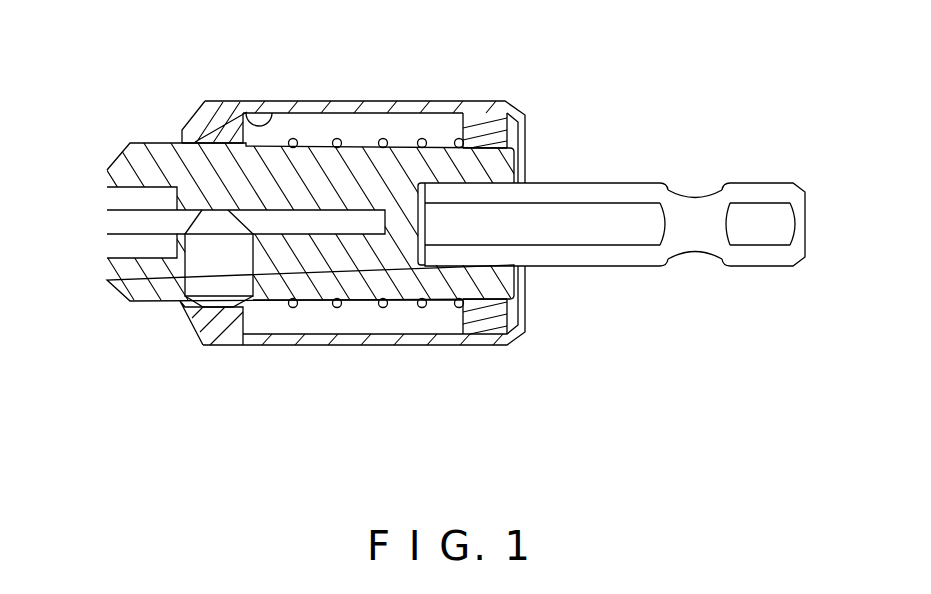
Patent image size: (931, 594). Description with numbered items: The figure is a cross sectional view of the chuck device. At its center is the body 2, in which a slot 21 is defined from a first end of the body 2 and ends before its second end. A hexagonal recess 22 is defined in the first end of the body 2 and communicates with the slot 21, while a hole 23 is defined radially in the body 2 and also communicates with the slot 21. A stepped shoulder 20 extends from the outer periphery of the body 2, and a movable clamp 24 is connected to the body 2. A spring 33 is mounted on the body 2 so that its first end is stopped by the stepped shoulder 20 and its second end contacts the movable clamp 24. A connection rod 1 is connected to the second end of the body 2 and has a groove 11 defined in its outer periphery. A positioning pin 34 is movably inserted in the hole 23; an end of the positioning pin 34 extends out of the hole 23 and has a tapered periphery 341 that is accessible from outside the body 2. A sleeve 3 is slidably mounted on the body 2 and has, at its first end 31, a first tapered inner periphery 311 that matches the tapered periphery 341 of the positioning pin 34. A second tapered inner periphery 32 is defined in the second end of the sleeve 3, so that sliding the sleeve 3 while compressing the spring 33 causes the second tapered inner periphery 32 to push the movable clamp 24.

The connection rod 1 is at (592, 203).
The groove 11 is at (697, 198).
The body 2 is at (512, 288).
The stepped shoulder 20 is at (275, 295).
The slot 21 is at (348, 218).
The hexagonal recess 22 is at (128, 200).
The hole 23 is at (202, 280).
The movable clamp 24 is at (490, 322).
The sleeve 3 is at (313, 103).
The first end of the sleeve 31 is at (250, 113).
The first tapered inner periphery 311 is at (208, 132).
The second tapered inner periphery 32 is at (523, 114).
The spring 33 is at (338, 139).
The positioning pin 34 is at (190, 290).
The tapered periphery 341 is at (245, 312).